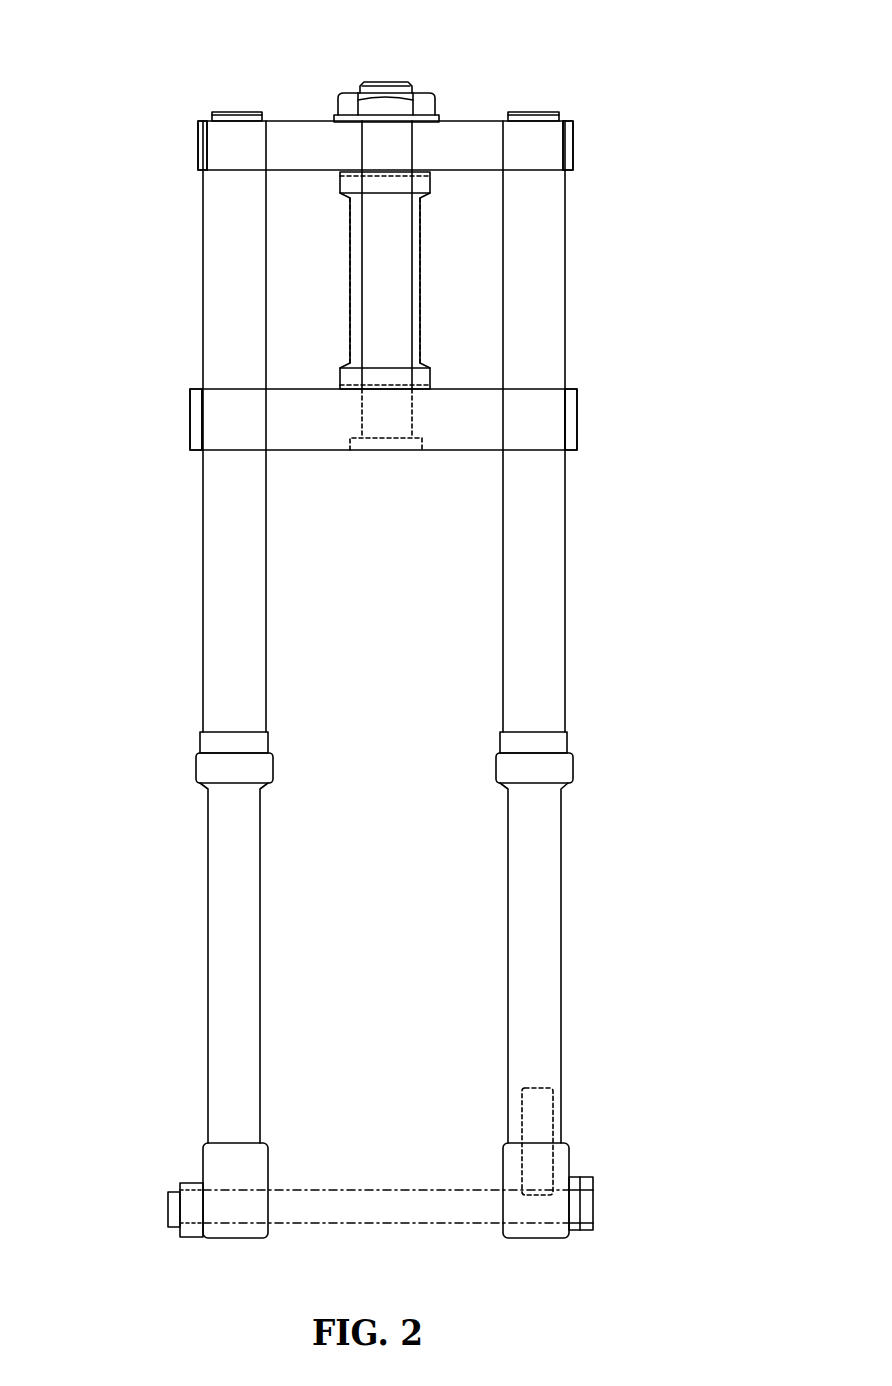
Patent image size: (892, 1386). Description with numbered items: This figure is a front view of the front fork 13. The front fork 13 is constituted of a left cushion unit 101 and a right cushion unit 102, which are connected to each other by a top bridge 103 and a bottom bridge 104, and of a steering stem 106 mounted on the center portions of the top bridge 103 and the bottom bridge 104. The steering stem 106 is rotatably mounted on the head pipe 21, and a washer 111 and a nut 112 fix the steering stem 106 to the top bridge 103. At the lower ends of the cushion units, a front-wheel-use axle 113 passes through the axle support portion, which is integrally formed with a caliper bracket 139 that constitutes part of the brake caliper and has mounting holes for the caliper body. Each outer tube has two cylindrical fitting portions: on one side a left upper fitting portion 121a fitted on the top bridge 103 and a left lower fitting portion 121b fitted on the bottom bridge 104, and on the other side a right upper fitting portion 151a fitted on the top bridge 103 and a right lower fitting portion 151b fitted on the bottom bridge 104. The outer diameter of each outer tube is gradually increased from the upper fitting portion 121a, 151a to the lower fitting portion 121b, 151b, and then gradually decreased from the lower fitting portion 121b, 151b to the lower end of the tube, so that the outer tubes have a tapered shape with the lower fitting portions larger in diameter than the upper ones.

The front fork 13 is at (168, 597).
The head pipe 21 is at (422, 273).
The left cushion unit 101 is at (573, 262).
The right cushion unit 102 is at (200, 270).
The top bridge 103 is at (298, 137).
The bottom bridge 104 is at (312, 437).
The steering stem 106 is at (350, 272).
The washer 111 is at (438, 118).
The nut 112 is at (430, 93).
The front-wheel-use axle 113 is at (377, 1190).
The left upper fitting portion 121a is at (573, 141).
The left lower fitting portion 121b is at (577, 423).
The caliper bracket 139 is at (552, 1107).
The right upper fitting portion 151a is at (198, 141).
The right lower fitting portion 151b is at (190, 423).